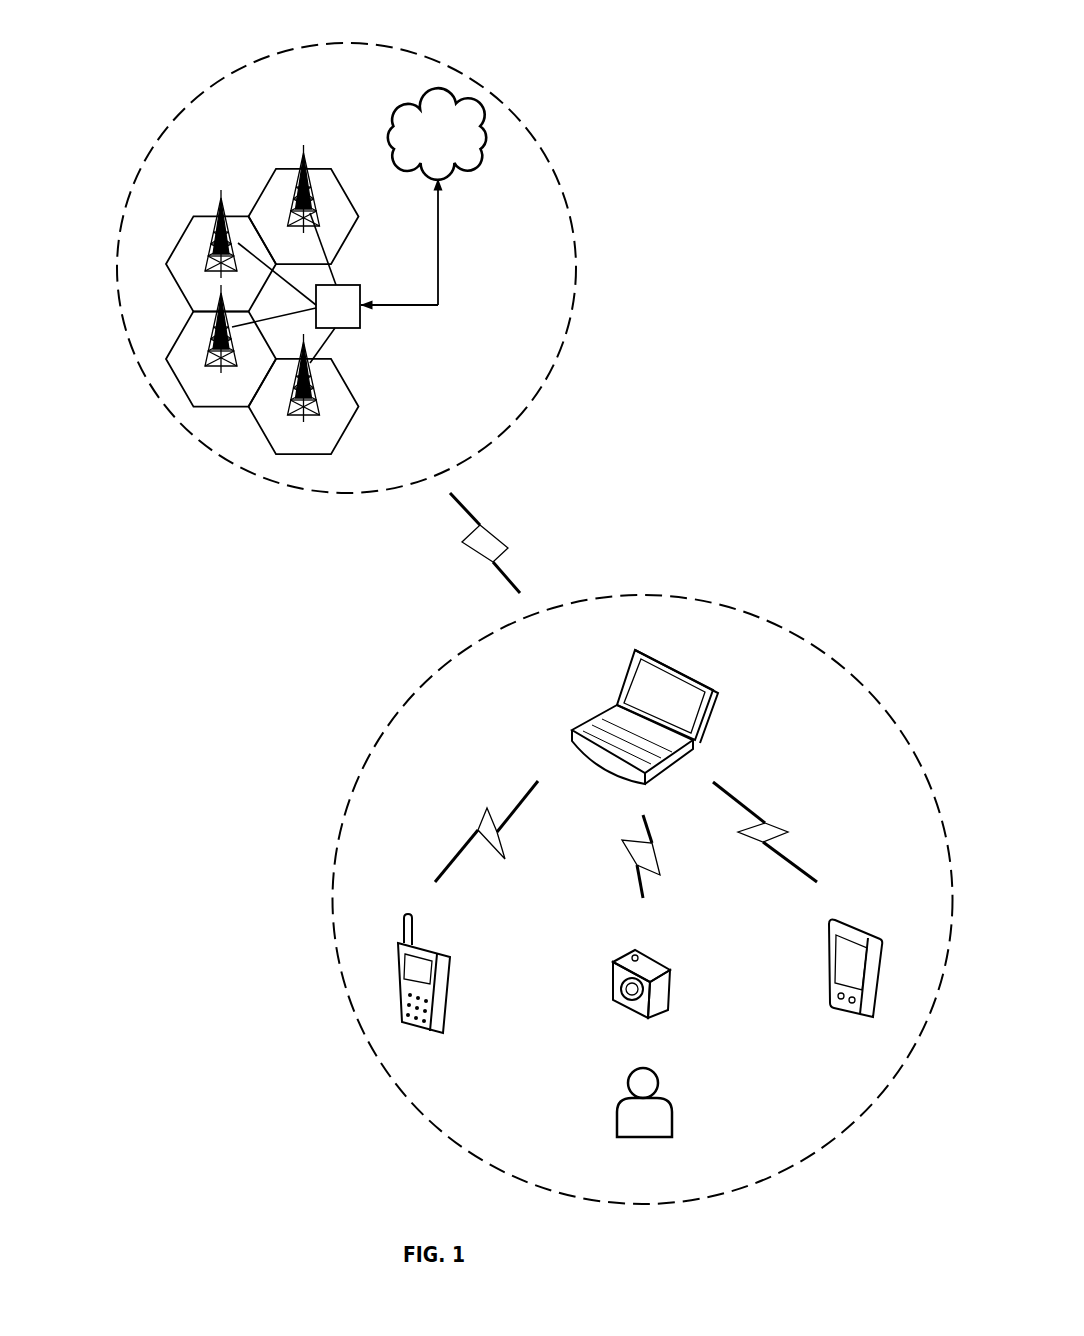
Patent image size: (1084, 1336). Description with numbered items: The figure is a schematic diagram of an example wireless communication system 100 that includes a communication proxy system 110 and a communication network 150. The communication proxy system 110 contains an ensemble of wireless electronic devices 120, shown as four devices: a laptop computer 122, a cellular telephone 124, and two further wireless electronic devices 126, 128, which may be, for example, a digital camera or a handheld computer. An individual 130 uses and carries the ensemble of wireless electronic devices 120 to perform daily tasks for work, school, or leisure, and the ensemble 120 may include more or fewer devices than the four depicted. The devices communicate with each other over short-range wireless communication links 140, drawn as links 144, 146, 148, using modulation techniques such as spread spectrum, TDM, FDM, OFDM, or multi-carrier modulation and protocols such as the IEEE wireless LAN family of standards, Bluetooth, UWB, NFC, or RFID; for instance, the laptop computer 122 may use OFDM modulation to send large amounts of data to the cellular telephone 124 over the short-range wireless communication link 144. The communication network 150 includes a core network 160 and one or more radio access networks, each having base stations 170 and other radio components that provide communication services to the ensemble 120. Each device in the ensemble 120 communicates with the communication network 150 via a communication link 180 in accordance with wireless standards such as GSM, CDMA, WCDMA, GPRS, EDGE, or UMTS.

The wireless communication system 100 is at (122, 48).
The communication proxy system 110 is at (332, 895).
The ensemble of wireless electronic devices 120 is at (538, 710).
The laptop computer 122 is at (688, 675).
The cellular telephone 124 is at (435, 938).
The wireless electronic device 126 is at (668, 972).
The wireless electronic device 128 is at (863, 920).
The individual 130 is at (668, 1113).
The short-range wireless communication links 140 is at (470, 803).
The short-range wireless communication link 144 is at (505, 859).
The short-range wireless communication link 146 is at (628, 837).
The short-range wireless communication link 148 is at (767, 827).
The communication network 150 is at (577, 265).
The core network 160 is at (493, 135).
The base stations 170 is at (298, 173).
The communication link 180 is at (503, 522).